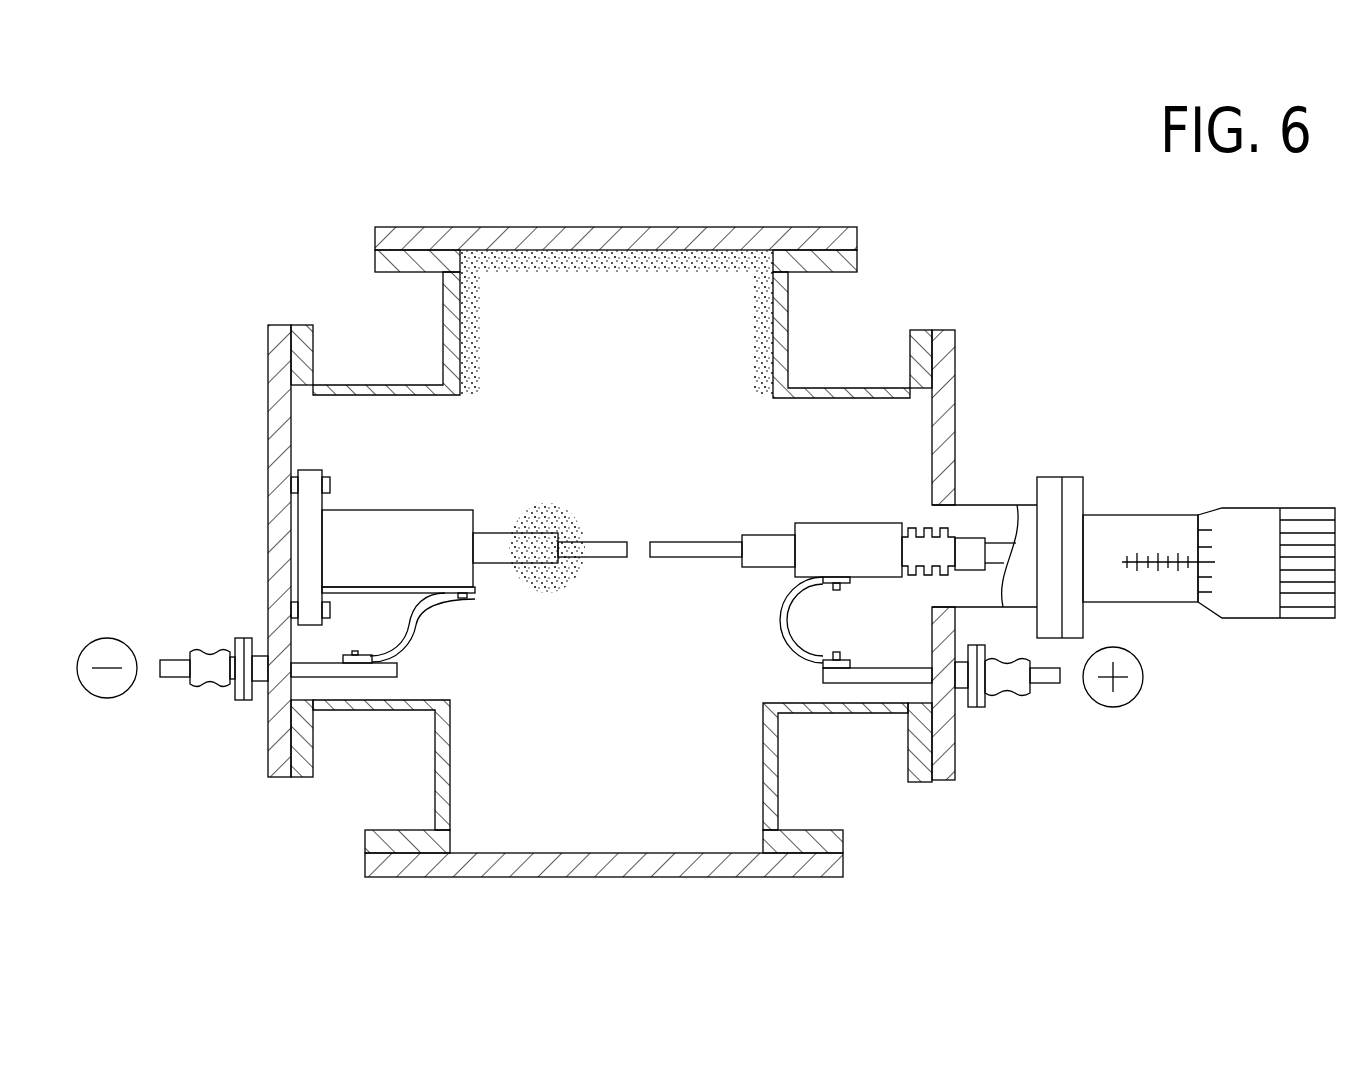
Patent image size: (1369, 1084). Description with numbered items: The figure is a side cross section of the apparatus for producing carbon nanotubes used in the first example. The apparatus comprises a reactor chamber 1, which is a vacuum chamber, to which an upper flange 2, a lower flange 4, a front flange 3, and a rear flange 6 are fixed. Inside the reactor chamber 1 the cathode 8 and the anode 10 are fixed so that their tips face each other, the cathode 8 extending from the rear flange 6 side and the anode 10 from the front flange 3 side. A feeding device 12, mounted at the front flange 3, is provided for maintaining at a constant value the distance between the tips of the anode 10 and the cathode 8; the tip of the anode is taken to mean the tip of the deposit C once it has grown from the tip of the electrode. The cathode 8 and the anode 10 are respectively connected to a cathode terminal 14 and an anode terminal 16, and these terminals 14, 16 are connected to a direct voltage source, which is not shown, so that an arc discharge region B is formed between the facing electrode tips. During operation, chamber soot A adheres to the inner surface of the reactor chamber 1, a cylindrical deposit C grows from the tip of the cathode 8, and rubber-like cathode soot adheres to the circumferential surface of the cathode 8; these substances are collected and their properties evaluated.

The reactor chamber 1 is at (860, 372).
The upper flange 2 is at (660, 226).
The front flange 3 is at (955, 395).
The lower flange 4 is at (620, 878).
The rear flange 6 is at (268, 422).
The cathode 8 is at (500, 530).
The anode 10 is at (697, 541).
The feeding device 12 is at (1170, 515).
The cathode terminal 14 is at (210, 690).
The anode terminal 16 is at (1015, 695).
The chamber soot A is at (500, 335).
The arc discharge region B is at (543, 520).
The deposit C is at (605, 560).